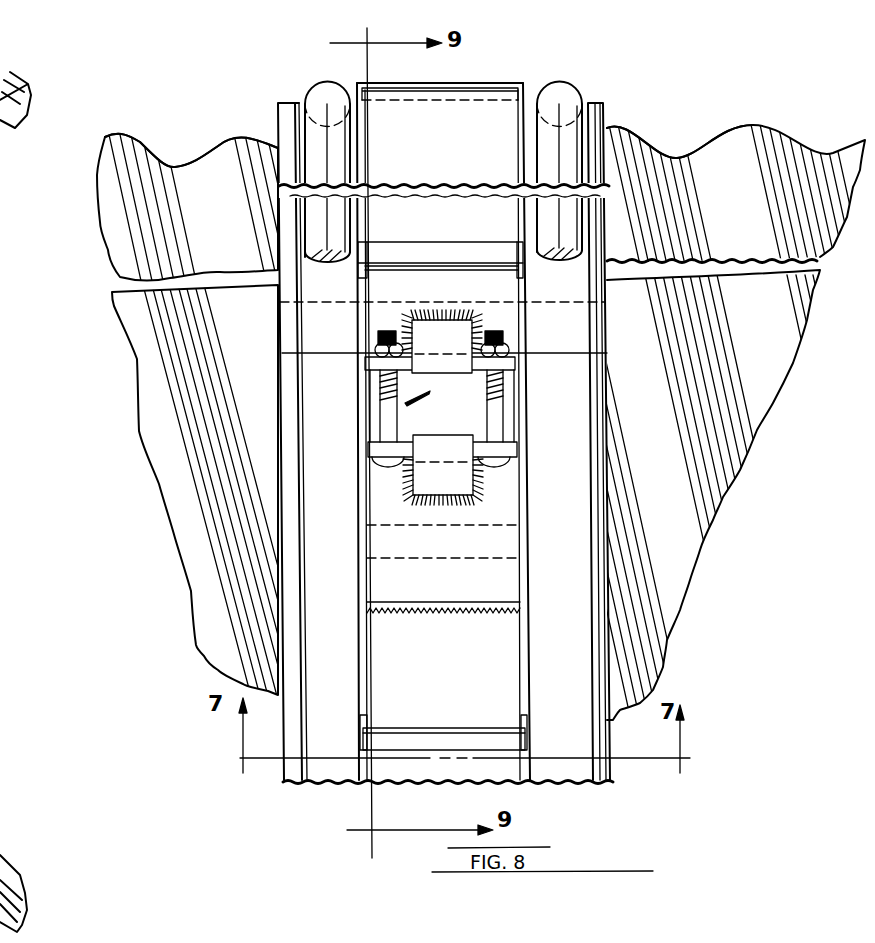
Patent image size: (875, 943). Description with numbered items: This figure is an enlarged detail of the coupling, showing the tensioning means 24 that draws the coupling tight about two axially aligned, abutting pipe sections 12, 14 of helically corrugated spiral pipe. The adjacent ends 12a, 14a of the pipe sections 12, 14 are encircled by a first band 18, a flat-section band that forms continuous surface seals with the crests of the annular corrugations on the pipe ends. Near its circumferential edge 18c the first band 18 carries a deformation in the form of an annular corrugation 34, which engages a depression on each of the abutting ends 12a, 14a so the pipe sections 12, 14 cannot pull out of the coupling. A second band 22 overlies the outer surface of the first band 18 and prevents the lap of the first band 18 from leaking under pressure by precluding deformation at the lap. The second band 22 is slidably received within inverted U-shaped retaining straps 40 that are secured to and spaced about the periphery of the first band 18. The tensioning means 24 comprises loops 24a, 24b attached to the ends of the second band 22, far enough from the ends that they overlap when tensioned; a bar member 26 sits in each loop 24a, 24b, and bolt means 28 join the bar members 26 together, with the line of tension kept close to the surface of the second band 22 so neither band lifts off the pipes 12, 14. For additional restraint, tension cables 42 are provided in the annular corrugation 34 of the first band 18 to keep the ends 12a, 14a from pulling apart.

The pipe section 12 is at (107, 213).
The end of pipe section 12a is at (235, 147).
The pipe section 14 is at (743, 183).
The end of pipe section 14a is at (627, 150).
The first band 18 is at (292, 708).
The circumferential edge of first band 18c is at (607, 110).
The second band 22 is at (410, 644).
The tensioning means 24 is at (395, 398).
The loop 24a is at (470, 327).
The loop 24b is at (470, 468).
The bar member 26 is at (505, 363).
The bolt means 28 is at (505, 400).
The annular corrugation 34 is at (568, 720).
The retaining strap 40 is at (467, 83).
The tension cable 42 is at (325, 88).